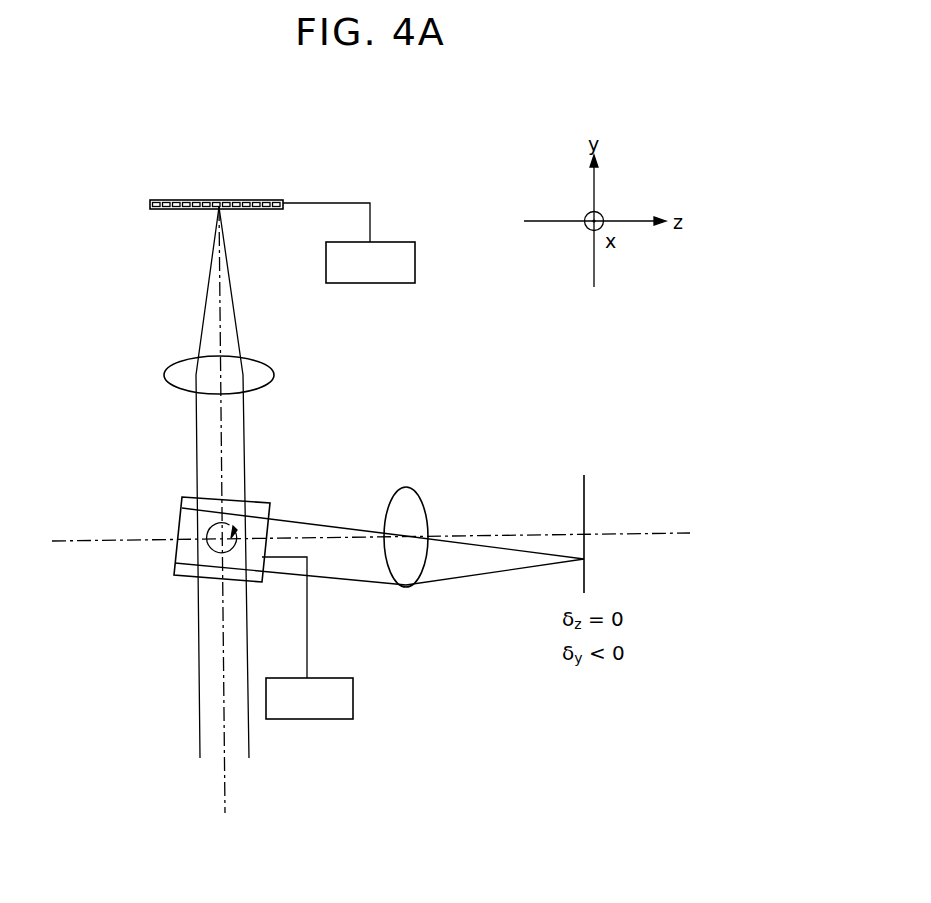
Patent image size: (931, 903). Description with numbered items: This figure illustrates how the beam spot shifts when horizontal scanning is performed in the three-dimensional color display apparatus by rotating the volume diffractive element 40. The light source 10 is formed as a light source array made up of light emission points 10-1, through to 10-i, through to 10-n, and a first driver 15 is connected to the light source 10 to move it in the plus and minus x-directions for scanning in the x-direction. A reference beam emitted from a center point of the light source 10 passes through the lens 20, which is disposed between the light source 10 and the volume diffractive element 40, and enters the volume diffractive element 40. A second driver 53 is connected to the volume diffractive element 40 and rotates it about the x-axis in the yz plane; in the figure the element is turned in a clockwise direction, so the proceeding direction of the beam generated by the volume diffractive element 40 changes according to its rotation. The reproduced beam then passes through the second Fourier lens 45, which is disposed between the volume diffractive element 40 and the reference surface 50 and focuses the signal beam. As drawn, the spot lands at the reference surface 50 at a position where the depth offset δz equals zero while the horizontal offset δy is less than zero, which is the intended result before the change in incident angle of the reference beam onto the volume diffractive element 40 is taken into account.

The light source 10 is at (192, 217).
The light emission point 10-1 is at (157, 198).
The light emission point 10-i is at (217, 198).
The light emission point 10-n is at (278, 198).
The first driver 15 is at (415, 262).
The lens 20 is at (274, 375).
The volume diffractive element 40 is at (183, 580).
The second Fourier lens 45 is at (404, 487).
The reference surface 50 is at (588, 490).
The second driver 53 is at (353, 698).